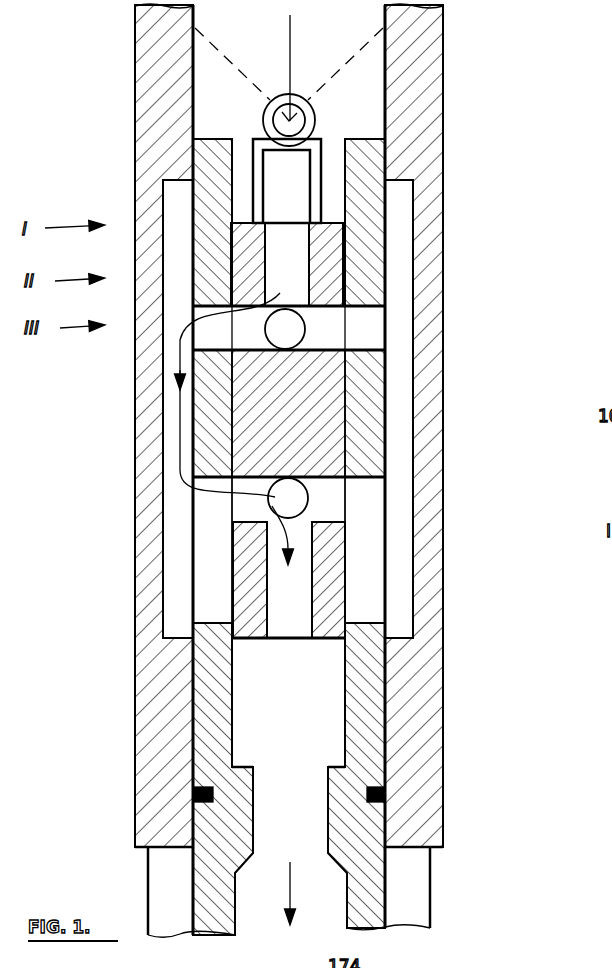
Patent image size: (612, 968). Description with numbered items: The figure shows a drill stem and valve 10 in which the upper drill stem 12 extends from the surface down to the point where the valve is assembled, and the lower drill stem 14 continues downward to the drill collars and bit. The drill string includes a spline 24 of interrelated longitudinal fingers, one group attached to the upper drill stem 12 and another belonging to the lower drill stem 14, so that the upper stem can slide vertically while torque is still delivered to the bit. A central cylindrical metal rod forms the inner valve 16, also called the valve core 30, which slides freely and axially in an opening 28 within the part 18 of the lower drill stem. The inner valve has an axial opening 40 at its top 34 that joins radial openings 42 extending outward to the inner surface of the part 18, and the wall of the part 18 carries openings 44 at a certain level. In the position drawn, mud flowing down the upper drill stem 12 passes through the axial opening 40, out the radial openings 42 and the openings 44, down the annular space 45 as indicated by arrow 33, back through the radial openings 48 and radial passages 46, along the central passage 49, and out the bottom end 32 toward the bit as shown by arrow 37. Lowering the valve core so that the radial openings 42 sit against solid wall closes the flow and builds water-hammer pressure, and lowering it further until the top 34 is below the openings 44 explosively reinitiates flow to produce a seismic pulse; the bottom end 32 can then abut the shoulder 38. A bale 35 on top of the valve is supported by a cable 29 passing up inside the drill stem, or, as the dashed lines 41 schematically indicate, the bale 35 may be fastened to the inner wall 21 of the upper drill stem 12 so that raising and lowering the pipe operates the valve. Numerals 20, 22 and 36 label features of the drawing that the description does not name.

The drill stem and valve 10 is at (474, 304).
The upper drill stem 12 is at (119, 134).
The lower drill stem 14 is at (132, 901).
The inner valve 16 is at (329, 416).
The part of lower drill stem 18 is at (193, 433).
The casing wall 20 is at (134, 100).
The inner wall of upper drill stem 21 is at (190, 69).
The seal ring 22 is at (383, 793).
The spline 24 is at (170, 884).
The opening 28 is at (236, 174).
The cable 29 is at (291, 56).
The valve core 30 is at (330, 462).
The bottom end of inner valve 32 is at (302, 640).
The arrow 33 is at (182, 404).
The top of inner valve 34 is at (281, 222).
The bale 35 is at (313, 133).
The ball core 36 is at (300, 106).
The arrow 37 is at (290, 884).
The shoulder 38 is at (318, 767).
The axial opening 40 is at (290, 288).
The dashed lines 41 is at (226, 60).
The radial openings 42 is at (313, 323).
The openings 44 is at (212, 340).
The annular space 45 is at (178, 620).
The radial passages 46 is at (278, 498).
The radial openings 48 is at (215, 549).
The central passage 49 is at (301, 604).